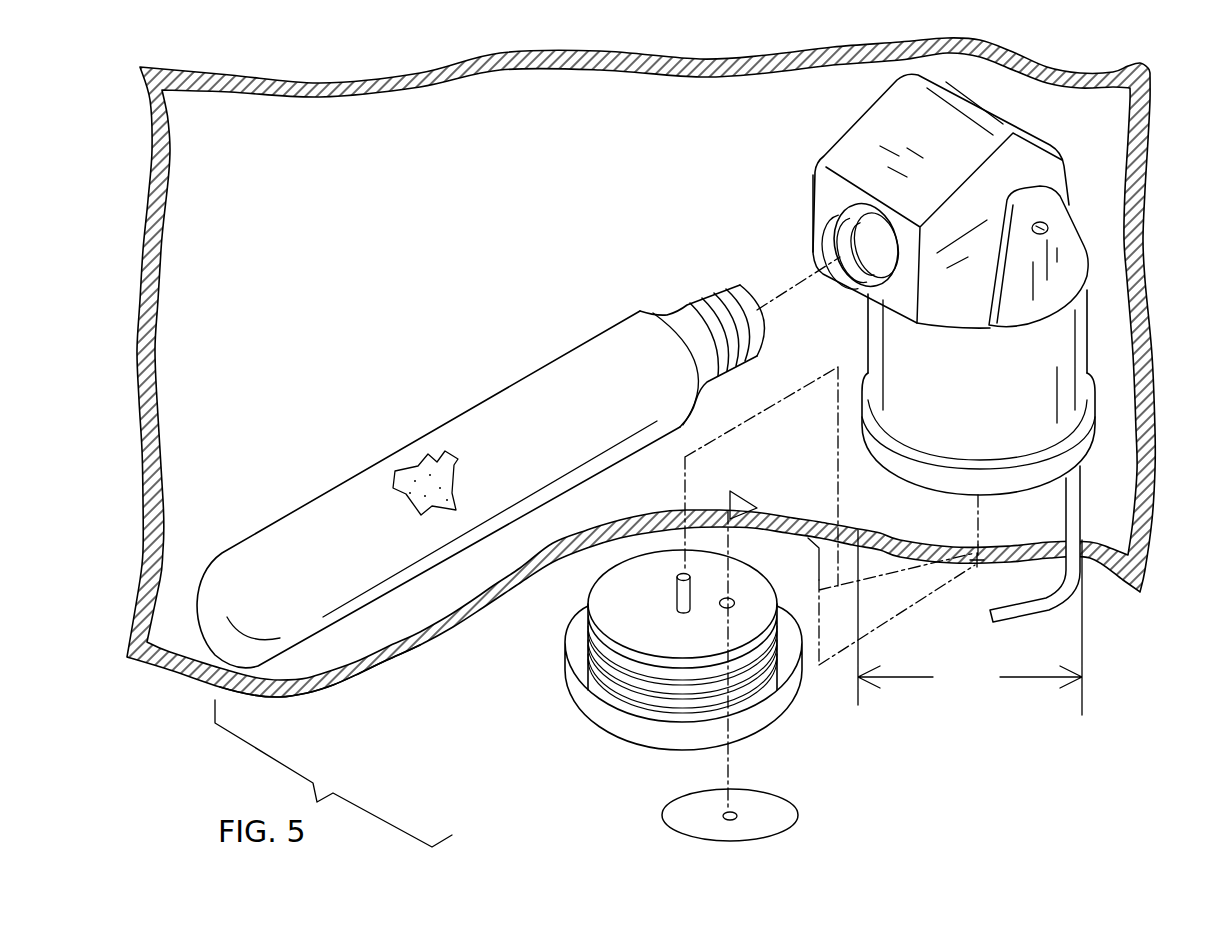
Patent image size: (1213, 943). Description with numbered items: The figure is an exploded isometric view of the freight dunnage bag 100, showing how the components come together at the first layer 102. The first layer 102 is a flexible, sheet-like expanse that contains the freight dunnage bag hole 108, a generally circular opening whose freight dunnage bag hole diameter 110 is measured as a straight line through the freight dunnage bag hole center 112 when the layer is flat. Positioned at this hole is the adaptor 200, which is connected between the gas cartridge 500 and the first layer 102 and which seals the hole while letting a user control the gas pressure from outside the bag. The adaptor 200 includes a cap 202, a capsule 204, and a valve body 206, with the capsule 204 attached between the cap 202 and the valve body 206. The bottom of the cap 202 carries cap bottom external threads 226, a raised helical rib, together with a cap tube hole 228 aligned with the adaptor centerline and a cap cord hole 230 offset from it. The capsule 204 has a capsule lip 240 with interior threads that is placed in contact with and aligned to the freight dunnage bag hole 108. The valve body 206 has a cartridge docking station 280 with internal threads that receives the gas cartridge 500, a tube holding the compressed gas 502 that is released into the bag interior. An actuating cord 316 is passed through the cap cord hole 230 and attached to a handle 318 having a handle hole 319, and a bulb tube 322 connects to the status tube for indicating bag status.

The freight dunnage bag 100 is at (307, 80).
The first layer 102 is at (342, 690).
The freight dunnage bag hole 108 is at (893, 562).
The freight dunnage bag hole diameter 110 is at (970, 622).
The freight dunnage bag hole center 112 is at (976, 563).
The adaptor 200 is at (994, 112).
The cap 202 is at (577, 692).
The capsule 204 is at (1073, 353).
The valve body 206 is at (875, 128).
The cap bottom external threads 226 is at (673, 692).
The cap tube hole 228 is at (681, 615).
The cap cord hole 230 is at (735, 608).
The capsule lip 240 is at (1088, 435).
The cartridge docking station 280 is at (857, 236).
The actuating cord 316 is at (1066, 603).
The handle 318 is at (790, 815).
The handle hole 319 is at (737, 818).
The bulb tube 322 is at (672, 584).
The gas cartridge 500 is at (453, 420).
The compressed gas 502 is at (413, 481).